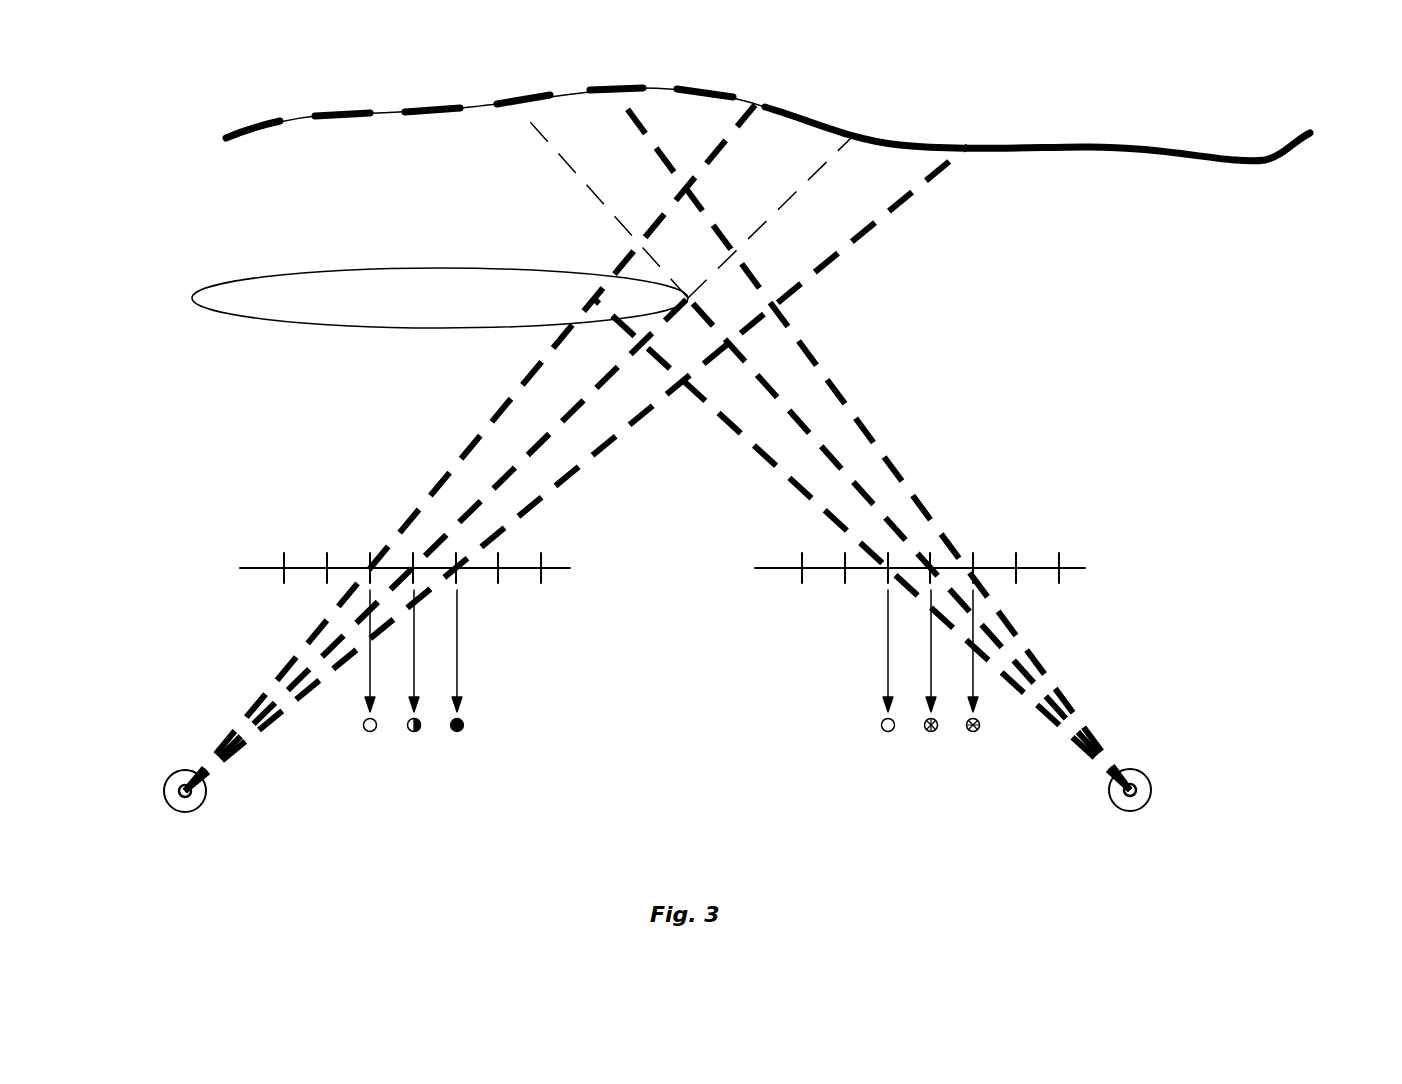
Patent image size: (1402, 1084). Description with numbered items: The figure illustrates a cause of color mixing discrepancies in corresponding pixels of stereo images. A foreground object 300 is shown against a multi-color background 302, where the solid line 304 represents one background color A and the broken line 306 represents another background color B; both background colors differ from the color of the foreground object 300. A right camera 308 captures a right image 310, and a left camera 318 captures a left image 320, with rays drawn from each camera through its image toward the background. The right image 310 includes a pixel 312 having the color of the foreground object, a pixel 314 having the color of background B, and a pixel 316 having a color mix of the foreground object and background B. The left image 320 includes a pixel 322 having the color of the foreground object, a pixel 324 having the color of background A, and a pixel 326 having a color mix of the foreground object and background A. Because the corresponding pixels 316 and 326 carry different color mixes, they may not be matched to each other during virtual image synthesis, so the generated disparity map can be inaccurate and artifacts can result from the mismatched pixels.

The foreground object 300 is at (353, 267).
The multi-color background 302 is at (1067, 173).
The solid line 304 is at (1130, 143).
The broken line 306 is at (352, 113).
The right camera 308 is at (1130, 811).
The right image 310 is at (1033, 563).
The pixel 312 is at (888, 732).
The pixel 314 is at (973, 732).
The pixel 316 is at (931, 732).
The left camera 318 is at (185, 812).
The left image 320 is at (310, 566).
The pixel 322 is at (370, 732).
The pixel 324 is at (457, 732).
The pixel 326 is at (414, 732).